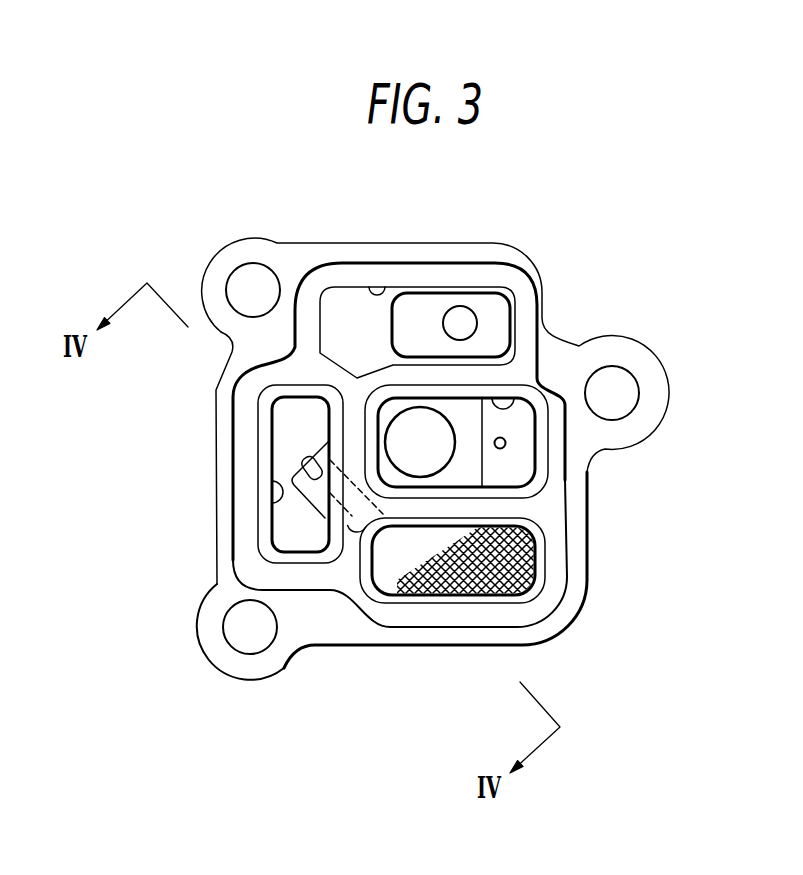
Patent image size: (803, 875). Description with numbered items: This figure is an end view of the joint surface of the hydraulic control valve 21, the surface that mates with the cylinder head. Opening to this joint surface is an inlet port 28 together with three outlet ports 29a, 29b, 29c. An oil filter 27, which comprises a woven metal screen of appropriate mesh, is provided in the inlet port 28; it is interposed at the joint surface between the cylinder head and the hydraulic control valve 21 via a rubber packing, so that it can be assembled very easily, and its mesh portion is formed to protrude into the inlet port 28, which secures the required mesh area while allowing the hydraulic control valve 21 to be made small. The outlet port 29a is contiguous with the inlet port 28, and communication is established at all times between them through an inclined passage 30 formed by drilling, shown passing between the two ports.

The hydraulic control valve 21 is at (489, 247).
The oil filter 27 is at (538, 567).
The inlet port 28 is at (401, 585).
The outlet port 29a is at (281, 504).
The outlet port 29b is at (391, 292).
The outlet port 29c is at (518, 398).
The inclined passage 30 is at (362, 530).